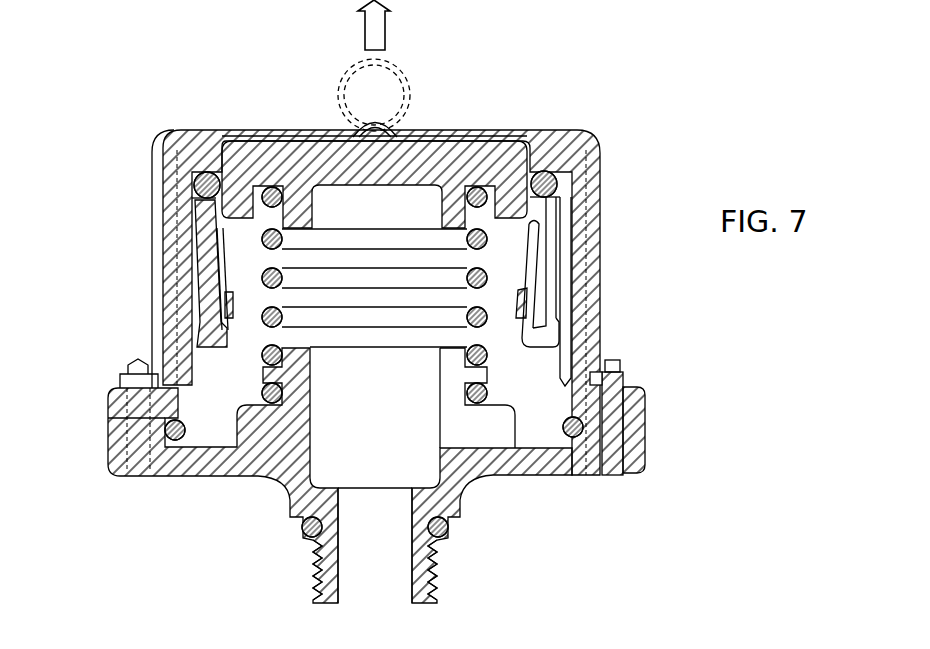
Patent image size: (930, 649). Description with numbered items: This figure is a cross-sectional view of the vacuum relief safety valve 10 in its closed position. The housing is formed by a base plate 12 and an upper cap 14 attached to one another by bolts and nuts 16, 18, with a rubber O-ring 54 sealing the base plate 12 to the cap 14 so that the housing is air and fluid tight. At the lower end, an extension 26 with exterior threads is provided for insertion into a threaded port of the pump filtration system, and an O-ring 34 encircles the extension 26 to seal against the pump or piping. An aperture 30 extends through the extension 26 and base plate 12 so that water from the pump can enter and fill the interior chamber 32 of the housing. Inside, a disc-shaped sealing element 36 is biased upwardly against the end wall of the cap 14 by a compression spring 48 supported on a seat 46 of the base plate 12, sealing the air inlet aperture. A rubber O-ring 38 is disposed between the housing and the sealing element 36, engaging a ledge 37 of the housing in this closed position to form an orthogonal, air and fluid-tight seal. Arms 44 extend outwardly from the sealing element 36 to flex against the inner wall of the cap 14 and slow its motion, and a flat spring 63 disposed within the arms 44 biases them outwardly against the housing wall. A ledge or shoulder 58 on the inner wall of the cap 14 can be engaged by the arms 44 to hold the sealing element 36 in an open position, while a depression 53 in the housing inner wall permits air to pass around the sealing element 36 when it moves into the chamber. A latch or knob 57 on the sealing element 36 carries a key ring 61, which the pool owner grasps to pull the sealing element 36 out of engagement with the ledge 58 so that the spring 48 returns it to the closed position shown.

The vacuum relief safety valve 10 is at (82, 187).
The base plate 12 is at (340, 475).
The upper cap 14 is at (403, 289).
The bolt 16 is at (636, 445).
The nut 18 is at (662, 415).
The extension 26 is at (405, 574).
The aperture 30 is at (362, 565).
The interior chamber 32 is at (451, 294).
The O-ring 34 is at (399, 542).
The sealing element 36 is at (374, 110).
The ledge 37 is at (598, 168).
The O-ring 38 is at (148, 158).
The arms 44 is at (158, 273).
The seat 46 is at (231, 466).
The spring 48 is at (266, 295).
The depression 53 is at (617, 287).
The O-ring 54 is at (601, 491).
The latch or knob 57 is at (415, 105).
The ledge or shoulder 58 is at (593, 291).
The key ring 61 is at (407, 83).
The flat spring 63 is at (439, 284).